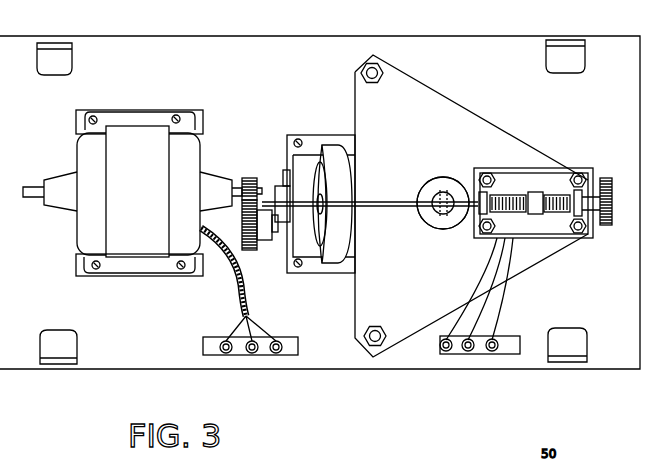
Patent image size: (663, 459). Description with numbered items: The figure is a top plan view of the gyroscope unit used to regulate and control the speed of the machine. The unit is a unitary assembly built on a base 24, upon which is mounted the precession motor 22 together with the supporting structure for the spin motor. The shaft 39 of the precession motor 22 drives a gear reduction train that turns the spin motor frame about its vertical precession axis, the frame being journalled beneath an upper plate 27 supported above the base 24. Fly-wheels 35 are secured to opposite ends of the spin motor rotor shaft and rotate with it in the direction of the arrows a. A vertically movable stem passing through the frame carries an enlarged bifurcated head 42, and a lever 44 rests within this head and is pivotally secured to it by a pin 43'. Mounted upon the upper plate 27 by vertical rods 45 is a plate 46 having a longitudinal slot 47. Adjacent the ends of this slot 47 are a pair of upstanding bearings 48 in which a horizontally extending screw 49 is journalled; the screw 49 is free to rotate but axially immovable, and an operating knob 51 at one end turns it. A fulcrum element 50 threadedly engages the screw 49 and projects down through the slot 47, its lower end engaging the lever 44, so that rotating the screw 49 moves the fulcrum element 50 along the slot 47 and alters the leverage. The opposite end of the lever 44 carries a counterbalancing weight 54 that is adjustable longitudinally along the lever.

The precession motor 22 is at (160, 232).
The base 24 is at (171, 52).
The upper plate 27 is at (510, 134).
The fly-wheels 35 is at (336, 152).
The shaft of the precession motor 39 is at (245, 185).
The bifurcated head 42 is at (434, 220).
The pin 43' is at (443, 191).
The lever 44 is at (382, 210).
The vertical rods 45 is at (487, 172).
The plate 46 is at (552, 170).
The longitudinal slot 47 is at (508, 195).
The upstanding bearings 48 is at (577, 195).
The screw 49 is at (512, 215).
The fulcrum element 50 is at (538, 214).
The operating knob 51 is at (606, 180).
The counterbalancing weight 54 is at (281, 218).
The arrows a is at (341, 236).